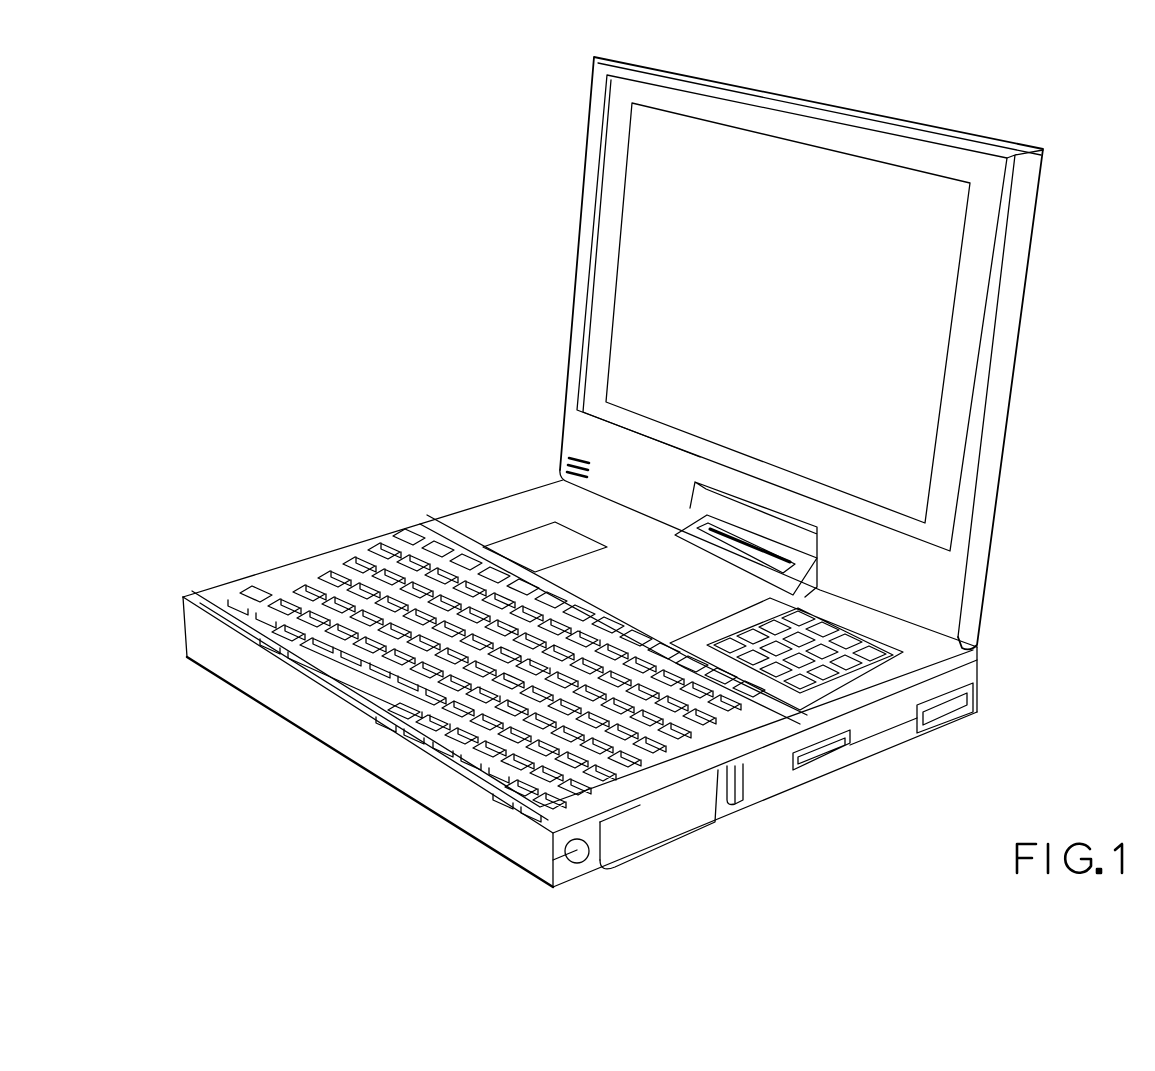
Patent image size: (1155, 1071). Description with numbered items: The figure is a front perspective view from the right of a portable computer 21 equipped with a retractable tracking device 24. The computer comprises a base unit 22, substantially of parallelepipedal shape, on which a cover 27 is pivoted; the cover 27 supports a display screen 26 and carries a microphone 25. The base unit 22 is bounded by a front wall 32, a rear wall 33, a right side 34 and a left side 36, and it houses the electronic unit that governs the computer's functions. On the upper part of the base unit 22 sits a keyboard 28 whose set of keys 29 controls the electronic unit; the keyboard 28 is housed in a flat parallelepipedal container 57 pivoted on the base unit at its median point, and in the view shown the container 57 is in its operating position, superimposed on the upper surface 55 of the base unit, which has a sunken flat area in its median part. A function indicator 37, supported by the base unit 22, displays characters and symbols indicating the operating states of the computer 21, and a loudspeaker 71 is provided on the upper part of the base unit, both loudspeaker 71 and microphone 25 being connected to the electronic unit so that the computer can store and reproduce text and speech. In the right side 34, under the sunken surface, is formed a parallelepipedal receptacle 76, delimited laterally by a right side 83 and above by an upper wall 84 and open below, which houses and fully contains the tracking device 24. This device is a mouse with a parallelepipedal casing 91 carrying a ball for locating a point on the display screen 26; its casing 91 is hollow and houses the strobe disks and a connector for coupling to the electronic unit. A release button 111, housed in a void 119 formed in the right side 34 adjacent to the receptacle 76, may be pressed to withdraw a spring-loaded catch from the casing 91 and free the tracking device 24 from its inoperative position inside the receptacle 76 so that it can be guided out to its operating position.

The portable computer 21 is at (456, 255).
The base unit 22 is at (503, 497).
The tracking device 24 is at (705, 838).
The microphone 25 is at (563, 462).
The display screen 26 is at (845, 180).
The cover 27 is at (1003, 377).
The keyboard 28 is at (216, 575).
The keys 29 is at (357, 588).
The front wall 32 is at (356, 740).
The rear wall 33 is at (985, 688).
The right side 34 is at (773, 773).
The left side 36 is at (185, 628).
The function indicator 37 is at (745, 553).
The upper surface 55 is at (450, 532).
The container 57 is at (297, 667).
The loudspeaker 71 is at (555, 550).
The receptacle 76 is at (617, 853).
The right side of receptacle 83 is at (740, 803).
The upper wall 84 is at (623, 808).
The casing 91 is at (668, 830).
The release button 111 is at (576, 866).
The void 119 is at (573, 867).